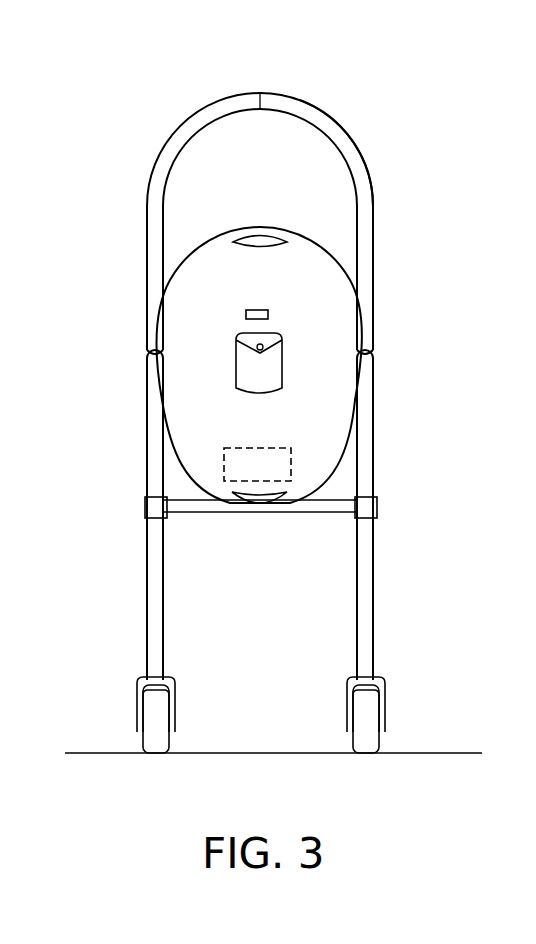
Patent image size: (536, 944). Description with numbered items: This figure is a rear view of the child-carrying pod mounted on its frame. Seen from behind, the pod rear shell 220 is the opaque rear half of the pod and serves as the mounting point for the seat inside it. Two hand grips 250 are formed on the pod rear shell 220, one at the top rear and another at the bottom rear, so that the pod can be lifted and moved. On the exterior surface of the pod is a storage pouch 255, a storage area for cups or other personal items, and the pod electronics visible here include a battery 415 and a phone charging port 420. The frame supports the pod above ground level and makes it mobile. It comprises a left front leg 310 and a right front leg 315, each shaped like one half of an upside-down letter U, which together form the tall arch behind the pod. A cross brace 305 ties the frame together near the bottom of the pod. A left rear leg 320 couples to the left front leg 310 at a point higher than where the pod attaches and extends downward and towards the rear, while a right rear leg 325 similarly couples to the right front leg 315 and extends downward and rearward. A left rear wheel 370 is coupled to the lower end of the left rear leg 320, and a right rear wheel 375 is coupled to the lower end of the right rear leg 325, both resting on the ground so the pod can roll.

The left front leg 310 is at (163, 155).
The right front leg 315 is at (347, 128).
The hand grips 250 is at (263, 238).
The pod rear shell 220 is at (316, 268).
The phone charging port 420 is at (268, 314).
The storage pouch 255 is at (278, 368).
The battery 415 is at (292, 467).
The cross brace 305 is at (318, 512).
The left rear leg 320 is at (152, 623).
The right rear leg 325 is at (372, 620).
The left rear wheel 370 is at (157, 750).
The right rear wheel 375 is at (365, 750).